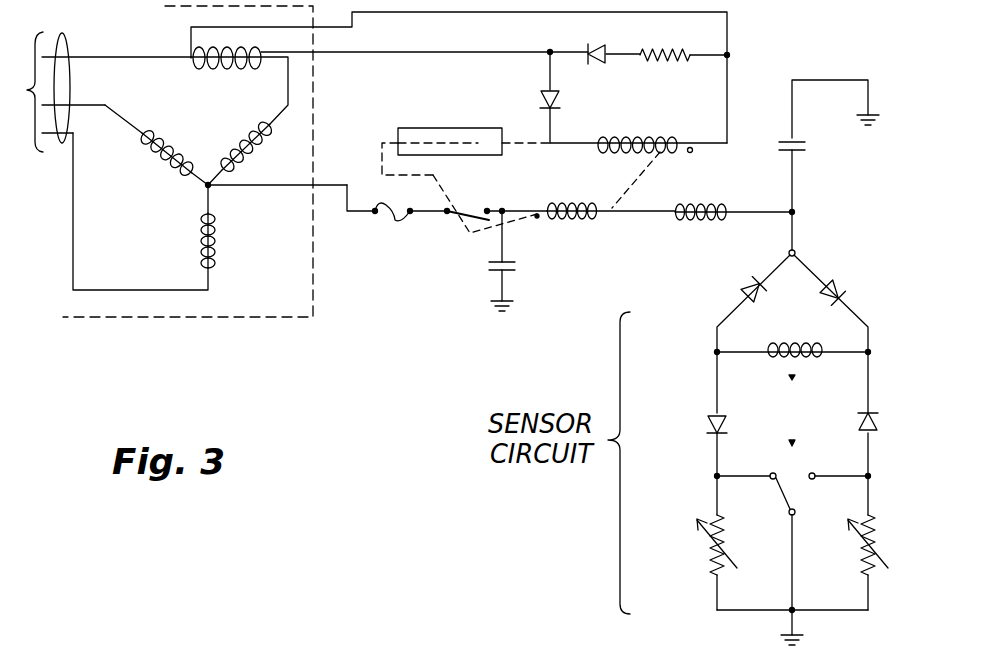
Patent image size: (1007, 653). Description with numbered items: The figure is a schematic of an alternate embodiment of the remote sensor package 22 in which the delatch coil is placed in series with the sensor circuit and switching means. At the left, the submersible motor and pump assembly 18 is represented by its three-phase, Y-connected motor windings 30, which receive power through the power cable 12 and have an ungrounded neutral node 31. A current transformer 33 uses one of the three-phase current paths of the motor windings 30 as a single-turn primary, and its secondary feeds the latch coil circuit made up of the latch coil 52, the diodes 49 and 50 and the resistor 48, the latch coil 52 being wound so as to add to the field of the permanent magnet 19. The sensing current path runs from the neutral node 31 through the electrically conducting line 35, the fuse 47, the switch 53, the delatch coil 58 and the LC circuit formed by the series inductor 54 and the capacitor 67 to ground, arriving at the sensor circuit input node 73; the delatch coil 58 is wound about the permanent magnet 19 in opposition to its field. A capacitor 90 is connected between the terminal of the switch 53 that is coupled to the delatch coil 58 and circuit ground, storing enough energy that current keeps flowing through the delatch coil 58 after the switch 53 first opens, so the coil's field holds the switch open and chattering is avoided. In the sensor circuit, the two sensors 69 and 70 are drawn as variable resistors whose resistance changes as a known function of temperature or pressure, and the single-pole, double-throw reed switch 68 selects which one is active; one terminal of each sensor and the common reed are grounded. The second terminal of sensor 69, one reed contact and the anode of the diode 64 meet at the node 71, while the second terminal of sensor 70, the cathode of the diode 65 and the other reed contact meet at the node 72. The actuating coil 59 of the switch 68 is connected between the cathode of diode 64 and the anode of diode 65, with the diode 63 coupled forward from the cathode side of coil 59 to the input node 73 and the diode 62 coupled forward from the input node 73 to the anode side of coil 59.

The power cable 12 is at (68, 46).
The submersible motor and pump assembly 18 is at (150, 317).
The permanent magnet 19 is at (422, 128).
The sensor package 22 is at (776, 62).
The motor windings 30 is at (174, 187).
The neutral node 31 is at (212, 189).
The current transformer 33 is at (208, 70).
The electrically conducting line 35 is at (348, 198).
The fuse 47 is at (391, 223).
The resistor 48 is at (660, 49).
The diode 49 is at (591, 44).
The diode 50 is at (546, 104).
The latch coil 52 is at (656, 168).
The switch 53 is at (470, 245).
The series inductor 54 is at (700, 221).
The delatch coil 58 is at (594, 205).
The actuating coil 59 is at (798, 345).
The diode 62 is at (843, 300).
The diode 63 is at (758, 278).
The diode 64 is at (708, 433).
The diode 65 is at (872, 413).
The capacitor 67 is at (800, 142).
The reed switch 68 is at (802, 490).
The sensor 69 is at (720, 545).
The sensor 70 is at (863, 550).
The node 71 is at (714, 477).
The node 72 is at (871, 477).
The input node 73 is at (800, 212).
The capacitor 90 is at (513, 272).